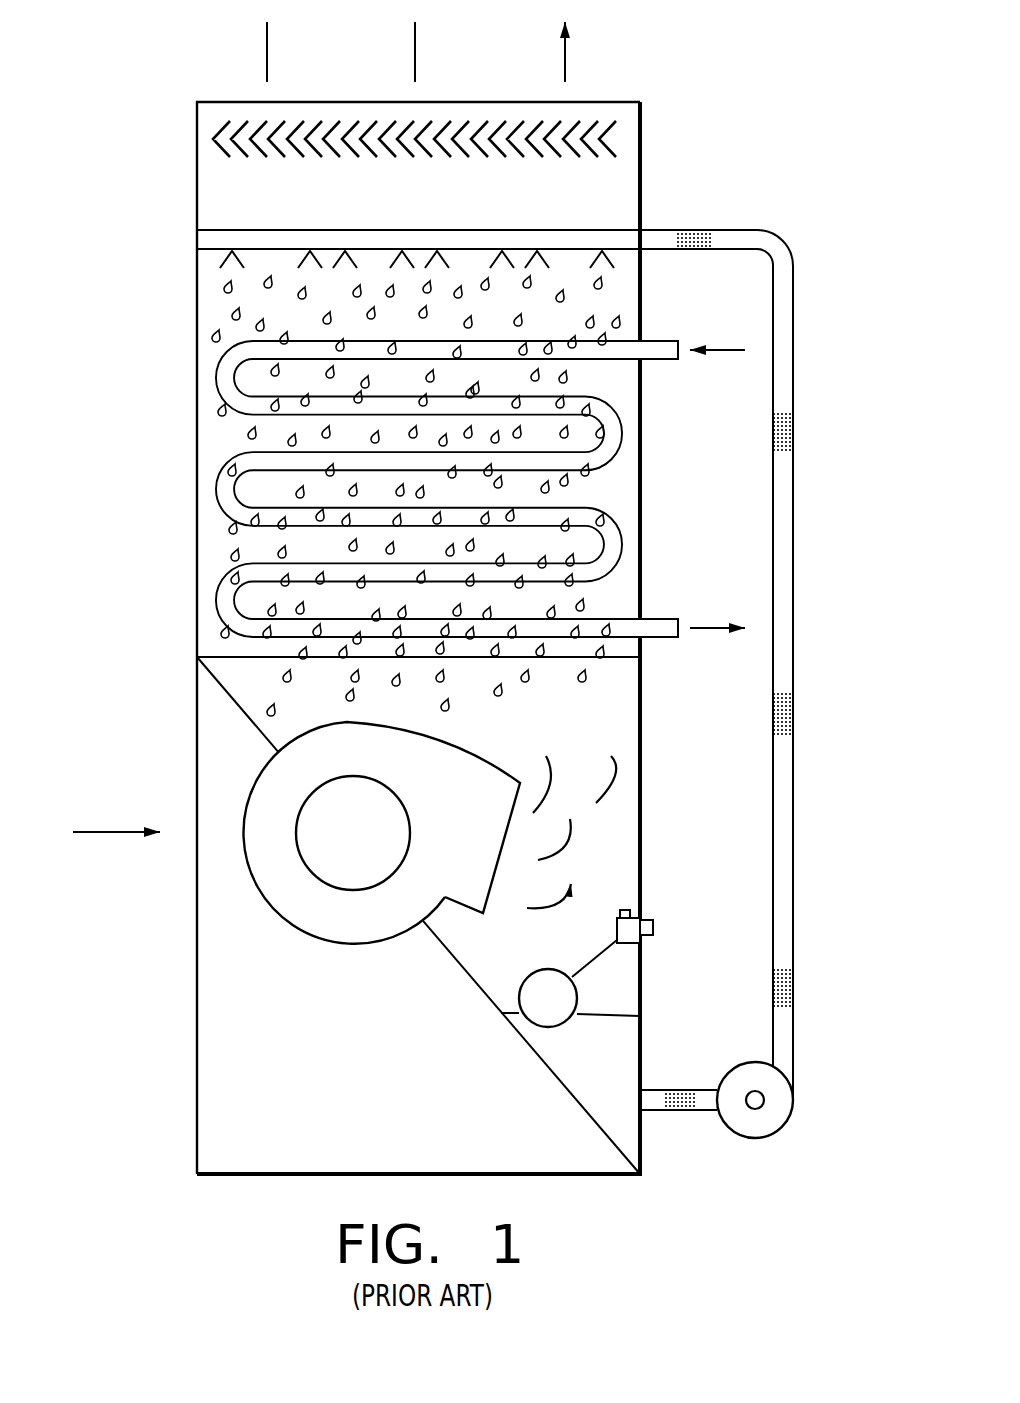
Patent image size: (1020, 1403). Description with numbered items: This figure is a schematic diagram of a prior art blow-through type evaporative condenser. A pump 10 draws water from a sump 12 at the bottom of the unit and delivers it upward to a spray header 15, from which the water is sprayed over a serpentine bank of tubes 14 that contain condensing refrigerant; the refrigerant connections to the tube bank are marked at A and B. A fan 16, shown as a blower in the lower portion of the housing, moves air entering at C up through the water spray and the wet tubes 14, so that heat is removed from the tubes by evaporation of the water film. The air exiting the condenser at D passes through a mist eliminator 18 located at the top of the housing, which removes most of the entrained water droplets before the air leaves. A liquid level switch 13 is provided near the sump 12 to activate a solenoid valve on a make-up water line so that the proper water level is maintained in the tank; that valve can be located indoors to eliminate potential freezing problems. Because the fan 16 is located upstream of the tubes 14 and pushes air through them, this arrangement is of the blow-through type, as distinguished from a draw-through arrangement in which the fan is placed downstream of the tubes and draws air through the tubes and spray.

The pump 10 is at (777, 1107).
The sump 12 is at (610, 1072).
The liquid level switch 13 is at (630, 937).
The tubes 14 is at (220, 382).
The spray header 15 is at (238, 245).
The fan 16 is at (477, 816).
The mist eliminator 18 is at (580, 130).
The refrigerant inlet A is at (725, 348).
The refrigerant outlet B is at (706, 628).
The air entry C is at (115, 833).
The air exit D is at (262, 77).